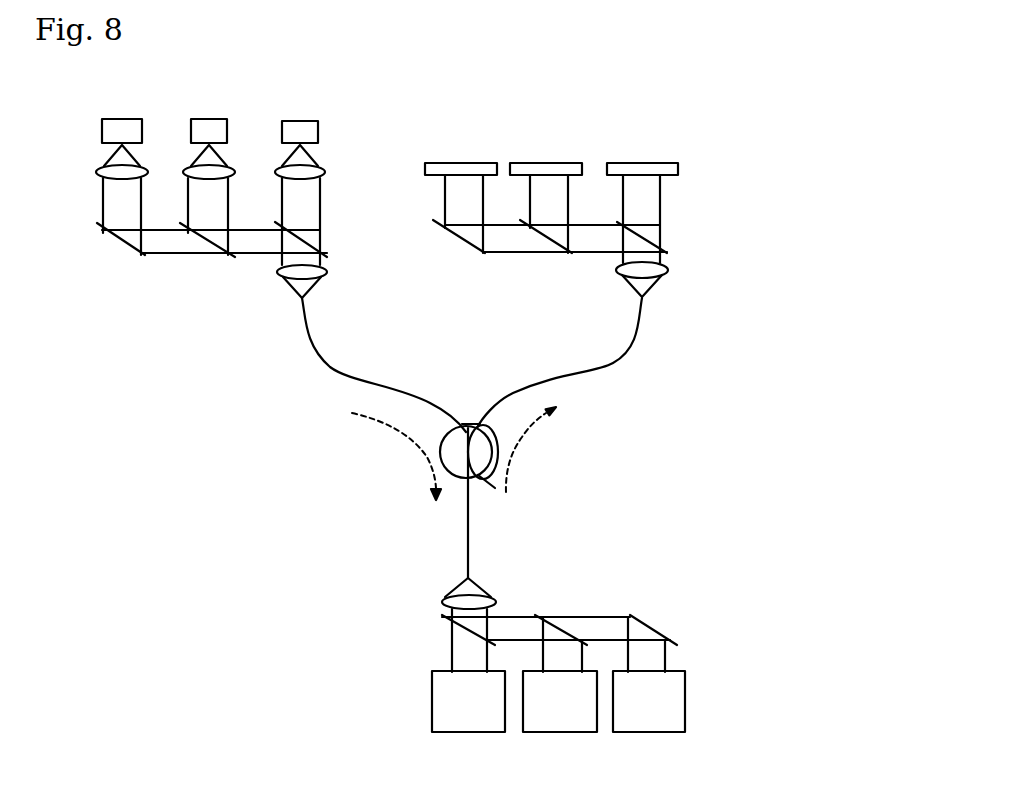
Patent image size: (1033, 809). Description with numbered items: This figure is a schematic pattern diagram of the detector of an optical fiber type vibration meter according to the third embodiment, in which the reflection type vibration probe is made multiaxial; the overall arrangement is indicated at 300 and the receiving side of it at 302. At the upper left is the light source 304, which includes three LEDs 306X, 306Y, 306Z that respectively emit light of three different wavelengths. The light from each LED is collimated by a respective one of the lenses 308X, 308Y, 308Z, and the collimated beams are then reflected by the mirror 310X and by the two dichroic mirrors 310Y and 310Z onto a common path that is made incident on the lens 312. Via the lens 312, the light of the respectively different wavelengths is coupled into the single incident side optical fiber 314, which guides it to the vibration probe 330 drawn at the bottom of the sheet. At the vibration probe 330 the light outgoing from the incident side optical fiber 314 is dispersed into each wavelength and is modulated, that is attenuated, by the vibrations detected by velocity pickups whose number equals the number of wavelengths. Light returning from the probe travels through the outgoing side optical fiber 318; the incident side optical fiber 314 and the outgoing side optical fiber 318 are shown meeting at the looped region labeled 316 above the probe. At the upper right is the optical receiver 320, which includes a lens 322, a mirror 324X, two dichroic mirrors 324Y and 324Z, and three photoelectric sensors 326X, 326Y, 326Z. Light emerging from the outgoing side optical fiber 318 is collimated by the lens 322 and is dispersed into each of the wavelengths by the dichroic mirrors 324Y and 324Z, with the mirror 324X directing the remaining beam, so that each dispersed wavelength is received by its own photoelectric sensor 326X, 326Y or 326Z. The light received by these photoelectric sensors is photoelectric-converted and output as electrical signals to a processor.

The optical system 300 is at (691, 110).
The detection optical unit 302 is at (746, 188).
The light source 304 is at (149, 288).
The LED 306X is at (103, 134).
The LED 306Y is at (205, 119).
The LED 306Z is at (316, 120).
The lens 308X is at (100, 172).
The lens 308Y is at (224, 162).
The lens 308Z is at (318, 168).
The mirror 310X is at (118, 243).
The dichroic mirror 310Y is at (210, 255).
The dichroic mirror 310Z is at (310, 230).
The lens 312 is at (282, 272).
The incident side optical fiber 314 is at (387, 380).
The optical fiber coupler 316 is at (478, 448).
The outgoing side optical fiber 318 is at (613, 360).
The optical receiver 320 is at (678, 300).
The lens 322 is at (667, 270).
The mirror 324X is at (462, 240).
The dichroic mirror 324Y is at (550, 238).
The dichroic mirror 324Z is at (643, 232).
The photoelectric sensor 326X is at (437, 162).
The photoelectric sensor 326Y is at (533, 162).
The photoelectric sensor 326Z is at (627, 162).
The vibration probe 330 is at (522, 580).